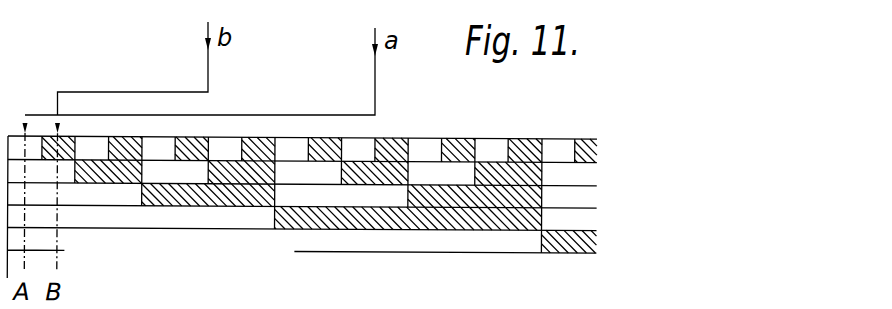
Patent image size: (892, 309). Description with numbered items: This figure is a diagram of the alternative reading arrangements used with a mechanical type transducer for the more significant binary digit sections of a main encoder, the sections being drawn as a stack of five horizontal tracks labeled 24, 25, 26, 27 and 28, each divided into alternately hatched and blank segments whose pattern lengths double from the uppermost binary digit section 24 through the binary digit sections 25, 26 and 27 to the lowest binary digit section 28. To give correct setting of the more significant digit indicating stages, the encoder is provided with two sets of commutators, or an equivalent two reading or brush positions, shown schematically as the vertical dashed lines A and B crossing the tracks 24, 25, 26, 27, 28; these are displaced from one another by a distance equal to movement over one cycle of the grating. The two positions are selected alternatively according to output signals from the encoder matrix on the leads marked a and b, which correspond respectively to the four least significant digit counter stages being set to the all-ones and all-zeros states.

The first layer (top) 24 is at (610, 148).
The second layer 25 is at (610, 170).
The third layer 26 is at (610, 194).
The fourth layer 27 is at (610, 216).
The fifth layer (bottom) 28 is at (610, 238).